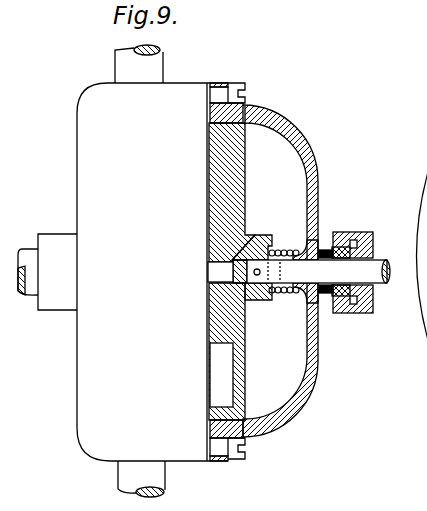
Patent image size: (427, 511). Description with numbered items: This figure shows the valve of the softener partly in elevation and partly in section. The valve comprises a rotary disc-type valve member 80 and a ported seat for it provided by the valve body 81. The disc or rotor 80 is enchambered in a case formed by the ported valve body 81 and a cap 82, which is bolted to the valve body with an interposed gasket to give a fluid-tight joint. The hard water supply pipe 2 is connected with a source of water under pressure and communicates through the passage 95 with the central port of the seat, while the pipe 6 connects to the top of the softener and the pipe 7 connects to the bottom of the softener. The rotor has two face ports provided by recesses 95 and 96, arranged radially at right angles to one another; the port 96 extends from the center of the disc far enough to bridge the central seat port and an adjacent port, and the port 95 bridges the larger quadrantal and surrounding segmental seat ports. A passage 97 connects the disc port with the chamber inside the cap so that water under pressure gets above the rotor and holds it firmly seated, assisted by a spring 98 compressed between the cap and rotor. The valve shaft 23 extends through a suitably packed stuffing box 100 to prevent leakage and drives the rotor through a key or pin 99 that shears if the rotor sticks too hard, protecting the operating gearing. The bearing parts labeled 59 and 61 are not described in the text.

The hard water supply pipe 2 is at (32, 257).
The pipe 6 is at (155, 68).
The pipe 7 is at (127, 478).
The valve shaft 23 is at (378, 284).
The bearing housing 59 is at (362, 313).
The bearing bushing 61 is at (333, 292).
The rotary disc-type valve member 80 is at (240, 170).
The valve body 81 is at (80, 398).
The cap 82 is at (303, 142).
The recess 95 is at (212, 383).
The recess 96 is at (215, 282).
The passage 97 is at (250, 232).
The spring 98 is at (297, 301).
The key or pin 99 is at (257, 276).
The stuffing box 100 is at (336, 240).